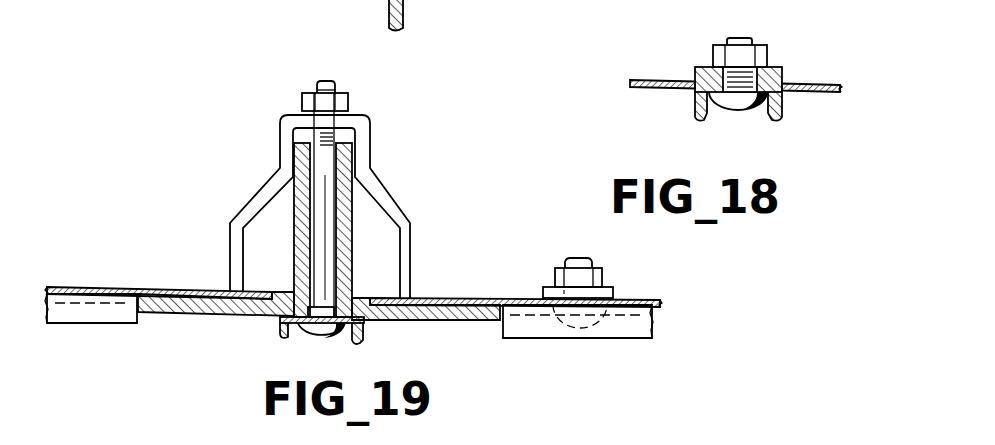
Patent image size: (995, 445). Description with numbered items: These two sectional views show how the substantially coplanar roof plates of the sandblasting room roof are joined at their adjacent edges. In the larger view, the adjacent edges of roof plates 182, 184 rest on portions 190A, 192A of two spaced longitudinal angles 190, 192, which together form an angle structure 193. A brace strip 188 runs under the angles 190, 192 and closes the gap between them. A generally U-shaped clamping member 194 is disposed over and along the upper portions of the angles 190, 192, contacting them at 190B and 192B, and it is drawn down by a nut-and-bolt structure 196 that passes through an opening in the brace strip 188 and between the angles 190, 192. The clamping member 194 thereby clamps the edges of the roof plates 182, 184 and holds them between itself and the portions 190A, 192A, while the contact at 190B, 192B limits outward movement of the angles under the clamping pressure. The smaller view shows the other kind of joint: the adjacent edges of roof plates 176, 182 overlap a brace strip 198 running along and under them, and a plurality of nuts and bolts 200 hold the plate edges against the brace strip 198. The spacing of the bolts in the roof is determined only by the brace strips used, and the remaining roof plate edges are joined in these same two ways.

In FIG. 18, the roof plate 176 is at (661, 80).
In FIG. 19, the roof plate 182 is at (68, 287).
In FIG. 18, the roof plate 182 is at (801, 83).
In FIG. 19, the roof plate 184 is at (468, 298).
In FIG. 19, the brace strip 188 is at (279, 338).
In FIG. 19, the longitudinal angle 190 is at (221, 239).
In FIG. 19, the portion of longitudinal angle 190A is at (178, 287).
In FIG. 19, the upper portion contact of angle 190B is at (296, 165).
In FIG. 19, the longitudinal angle 192 is at (418, 230).
In FIG. 19, the portion of longitudinal angle 192A is at (445, 298).
In FIG. 19, the upper portion contact of angle 192B is at (347, 162).
In FIG. 19, the angle structure 193 is at (339, 206).
In FIG. 19, the clamping member 194 is at (397, 212).
In FIG. 19, the nut-and-bolt structure 196 is at (339, 104).
In FIG. 19, the brace strip 198 is at (65, 323).
In FIG. 18, the brace strip 198 is at (780, 116).
In FIG. 18, the nuts and bolts 200 is at (760, 55).